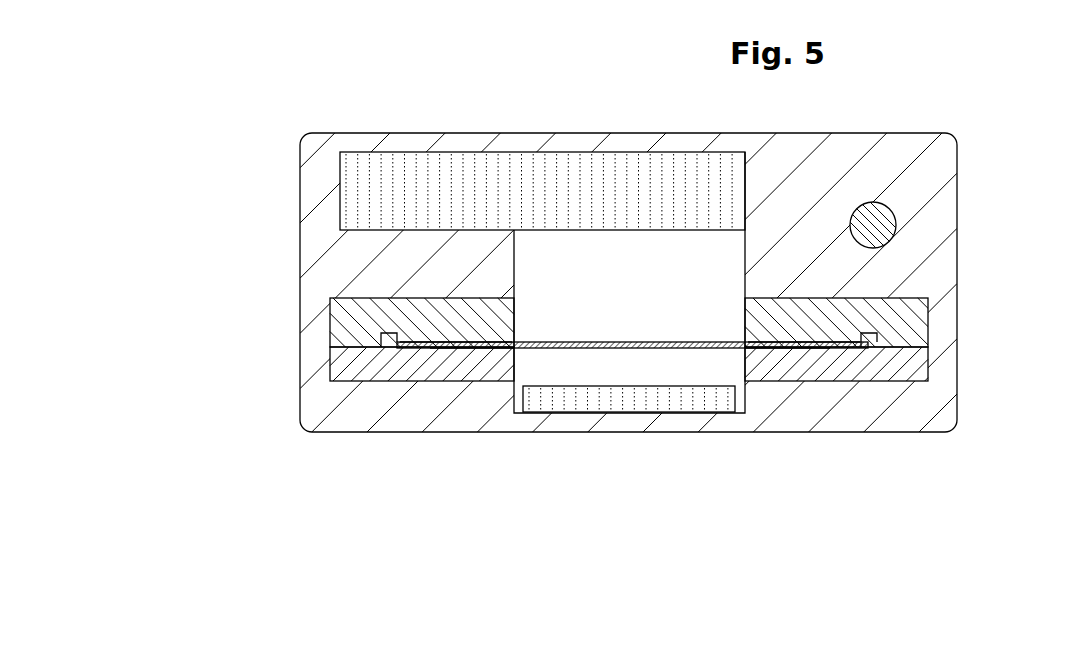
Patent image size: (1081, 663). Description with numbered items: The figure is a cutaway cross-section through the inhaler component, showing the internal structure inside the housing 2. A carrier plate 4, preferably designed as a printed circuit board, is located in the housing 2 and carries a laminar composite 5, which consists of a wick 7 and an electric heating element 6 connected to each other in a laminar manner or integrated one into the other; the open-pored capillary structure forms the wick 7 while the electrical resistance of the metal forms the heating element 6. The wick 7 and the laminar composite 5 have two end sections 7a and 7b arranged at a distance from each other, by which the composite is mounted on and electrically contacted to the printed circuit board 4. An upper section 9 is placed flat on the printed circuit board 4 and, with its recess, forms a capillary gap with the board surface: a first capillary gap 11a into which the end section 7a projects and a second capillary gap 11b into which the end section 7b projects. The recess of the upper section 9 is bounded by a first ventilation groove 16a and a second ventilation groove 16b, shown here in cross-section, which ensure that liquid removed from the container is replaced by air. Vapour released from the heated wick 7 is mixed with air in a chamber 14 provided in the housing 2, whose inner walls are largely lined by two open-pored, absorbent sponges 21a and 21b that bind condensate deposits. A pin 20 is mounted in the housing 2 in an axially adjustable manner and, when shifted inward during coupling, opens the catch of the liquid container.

The housing 2 is at (313, 250).
The carrier plate 4 is at (900, 367).
The laminar composite 5 is at (632, 445).
The electric heating element 6 is at (632, 445).
The wick 7 is at (608, 350).
The end section 7a is at (780, 347).
The end section 7b is at (482, 347).
The upper section 9 is at (905, 327).
The first capillary gap 11a is at (828, 345).
The second capillary gap 11b is at (428, 348).
The chamber 14 is at (625, 278).
The first ventilation groove 16a is at (867, 343).
The second ventilation groove 16b is at (388, 338).
The pin 20 is at (873, 222).
The sponge 21a is at (503, 190).
The sponge 21b is at (661, 400).